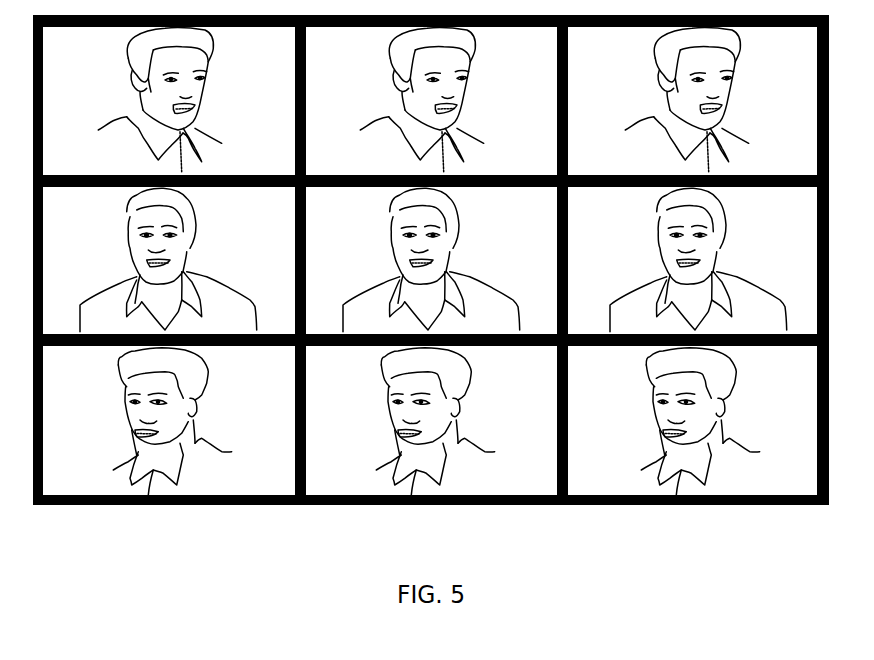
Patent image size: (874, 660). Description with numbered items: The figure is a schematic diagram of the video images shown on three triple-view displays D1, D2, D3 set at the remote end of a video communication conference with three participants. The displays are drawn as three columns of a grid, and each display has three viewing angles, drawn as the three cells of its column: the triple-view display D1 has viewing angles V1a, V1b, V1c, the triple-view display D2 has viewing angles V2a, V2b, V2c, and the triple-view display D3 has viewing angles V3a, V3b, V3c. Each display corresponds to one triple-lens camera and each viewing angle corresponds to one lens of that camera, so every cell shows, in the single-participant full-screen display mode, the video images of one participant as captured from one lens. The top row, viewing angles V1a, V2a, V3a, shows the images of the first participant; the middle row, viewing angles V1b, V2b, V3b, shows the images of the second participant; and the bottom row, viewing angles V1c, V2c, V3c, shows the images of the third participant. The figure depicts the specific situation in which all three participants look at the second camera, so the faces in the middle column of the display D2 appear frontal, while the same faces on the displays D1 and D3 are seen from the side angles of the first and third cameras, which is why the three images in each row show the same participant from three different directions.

The triple-view display D1 is at (169, 281).
The triple-view display D2 is at (431, 281).
The triple-view display D3 is at (692, 281).
The viewing angle V1a is at (138, 99).
The viewing angle V2a is at (403, 99).
The viewing angle V3a is at (666, 99).
The viewing angle V1b is at (156, 259).
The viewing angle V2b is at (421, 259).
The viewing angle V3b is at (685, 259).
The viewing angle V1c is at (143, 421).
The viewing angle V2c is at (408, 421).
The viewing angle V3c is at (672, 421).